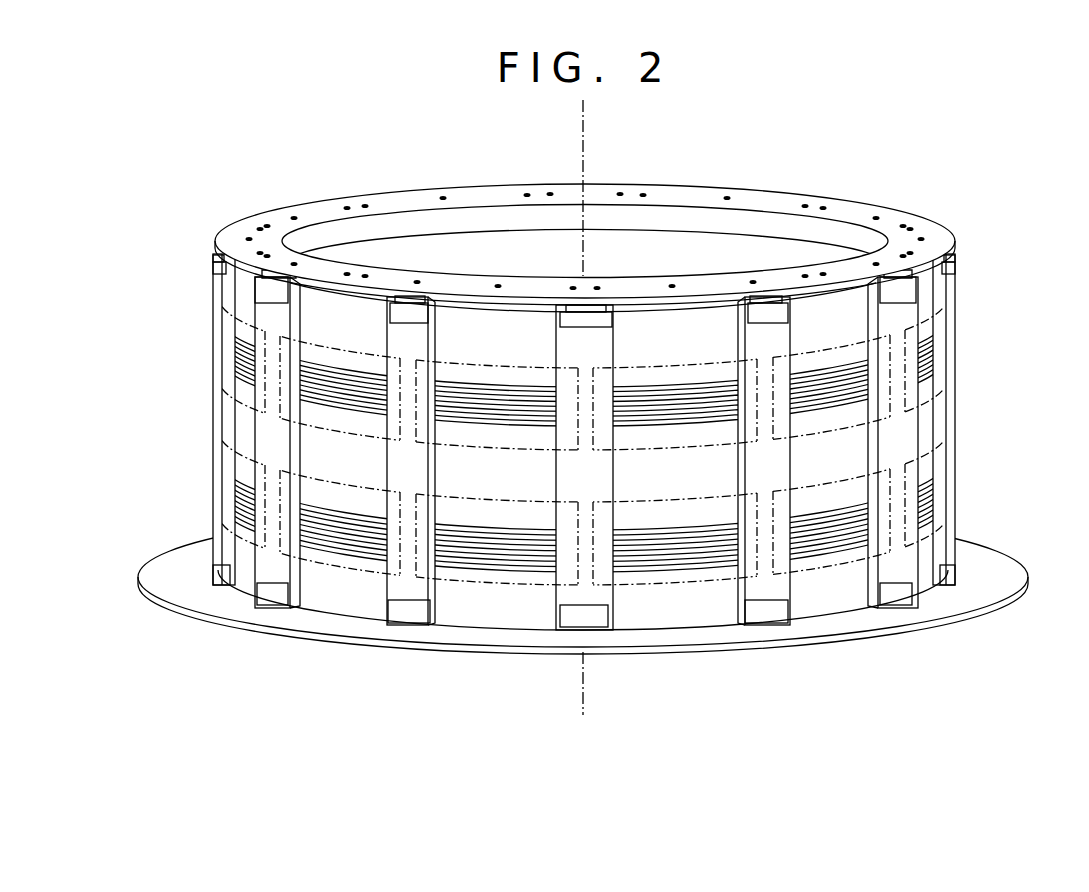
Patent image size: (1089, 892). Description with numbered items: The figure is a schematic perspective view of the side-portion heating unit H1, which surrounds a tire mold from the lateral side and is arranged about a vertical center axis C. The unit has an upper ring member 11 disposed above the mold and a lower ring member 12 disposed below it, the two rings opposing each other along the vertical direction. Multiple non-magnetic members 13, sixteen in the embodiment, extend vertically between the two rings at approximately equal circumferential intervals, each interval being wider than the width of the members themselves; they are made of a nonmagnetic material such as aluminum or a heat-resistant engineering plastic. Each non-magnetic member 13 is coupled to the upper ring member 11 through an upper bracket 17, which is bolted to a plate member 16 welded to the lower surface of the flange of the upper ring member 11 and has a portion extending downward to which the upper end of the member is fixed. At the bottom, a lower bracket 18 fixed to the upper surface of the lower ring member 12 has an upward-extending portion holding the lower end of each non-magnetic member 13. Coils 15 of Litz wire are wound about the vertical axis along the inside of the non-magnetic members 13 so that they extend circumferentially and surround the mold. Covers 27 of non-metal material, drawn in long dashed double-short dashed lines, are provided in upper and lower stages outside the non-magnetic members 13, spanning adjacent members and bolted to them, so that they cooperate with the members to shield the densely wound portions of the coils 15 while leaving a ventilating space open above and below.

The upper ring member 11 is at (615, 188).
The lower ring member 12 is at (982, 545).
The non-magnetic member 13 is at (277, 450).
The coil 15 is at (477, 412).
The plate member 16 is at (275, 280).
The upper bracket 17 is at (263, 295).
The lower bracket 18 is at (217, 584).
The cover 27 is at (220, 310).
The center axis C is at (583, 150).
The side-portion heating unit H1 is at (775, 165).